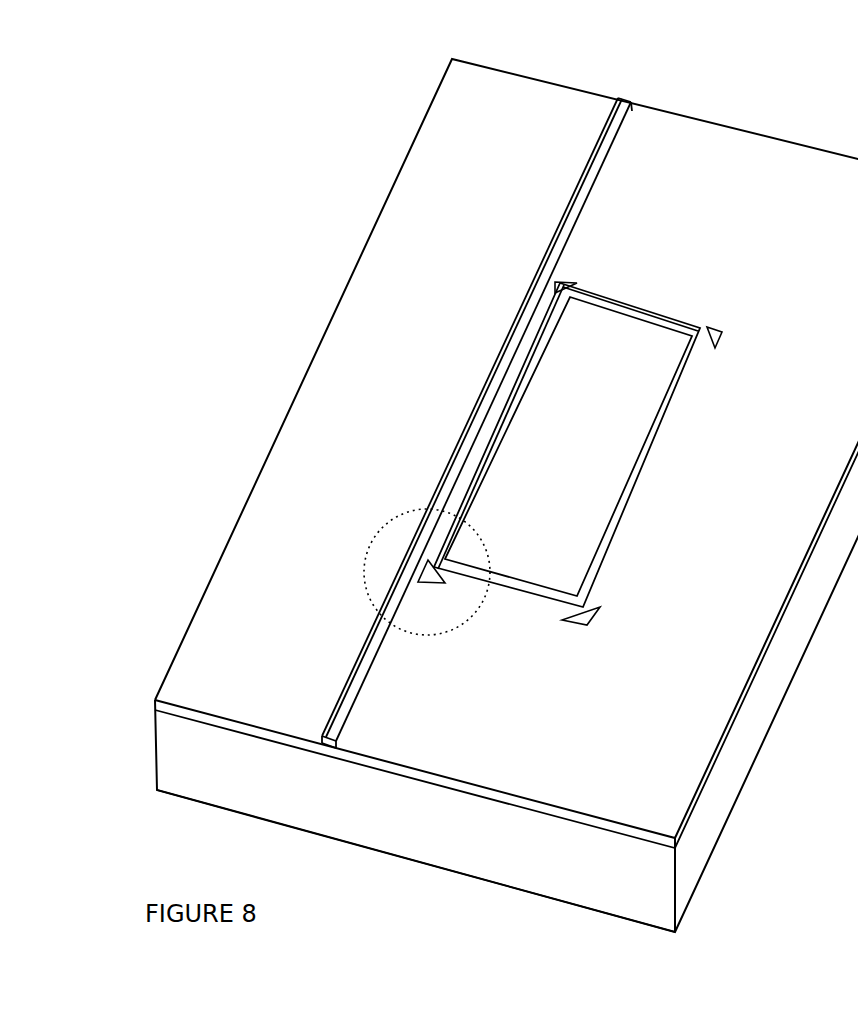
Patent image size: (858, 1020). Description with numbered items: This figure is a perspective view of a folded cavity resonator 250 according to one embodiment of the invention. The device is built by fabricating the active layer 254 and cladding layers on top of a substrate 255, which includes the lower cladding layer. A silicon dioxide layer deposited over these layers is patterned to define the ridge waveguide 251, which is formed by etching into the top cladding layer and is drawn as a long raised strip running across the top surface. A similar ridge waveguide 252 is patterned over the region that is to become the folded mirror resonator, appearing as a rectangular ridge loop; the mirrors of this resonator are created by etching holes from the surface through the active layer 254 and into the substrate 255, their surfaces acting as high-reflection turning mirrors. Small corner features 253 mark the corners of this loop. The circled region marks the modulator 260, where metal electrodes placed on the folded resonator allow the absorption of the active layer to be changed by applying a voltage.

The folded cavity resonator 250 is at (244, 279).
The ridge waveguide 251 is at (603, 150).
The ridge waveguide 252 is at (667, 420).
The corner tabs 253 is at (709, 326).
The active layer 254 is at (597, 822).
The substrate 255 is at (693, 848).
The modulator 260 is at (395, 545).